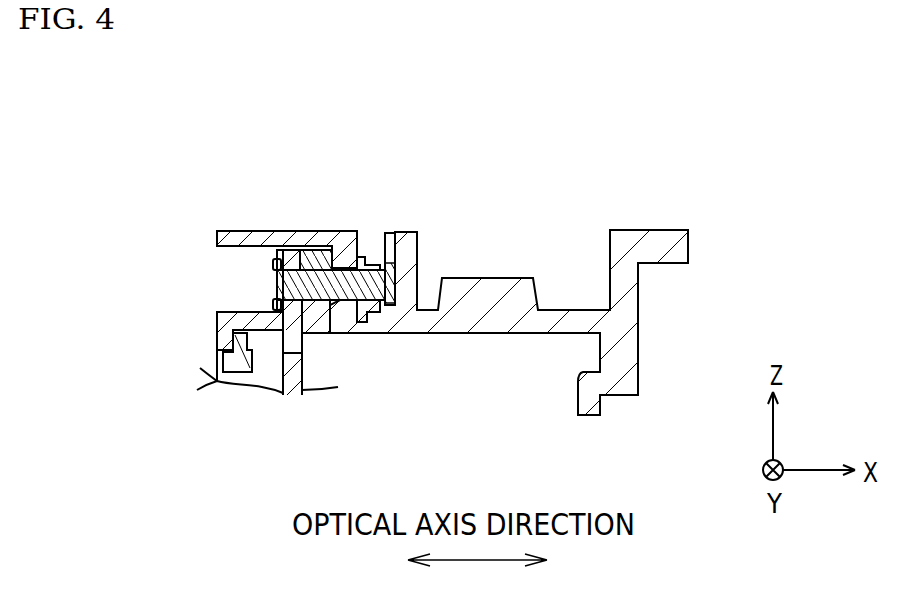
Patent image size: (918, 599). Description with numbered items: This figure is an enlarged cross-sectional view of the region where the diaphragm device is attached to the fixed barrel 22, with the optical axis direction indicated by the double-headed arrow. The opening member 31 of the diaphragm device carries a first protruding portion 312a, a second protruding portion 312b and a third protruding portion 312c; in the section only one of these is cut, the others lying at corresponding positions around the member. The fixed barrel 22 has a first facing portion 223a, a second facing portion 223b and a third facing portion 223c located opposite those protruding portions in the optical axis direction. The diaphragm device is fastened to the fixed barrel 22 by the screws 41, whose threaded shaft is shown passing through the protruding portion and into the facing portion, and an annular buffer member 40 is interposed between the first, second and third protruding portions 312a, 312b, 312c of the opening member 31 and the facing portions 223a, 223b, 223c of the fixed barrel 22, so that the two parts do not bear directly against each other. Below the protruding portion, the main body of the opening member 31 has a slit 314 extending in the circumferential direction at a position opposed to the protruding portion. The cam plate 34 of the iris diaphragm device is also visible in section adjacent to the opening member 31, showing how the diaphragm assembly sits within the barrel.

The fixed barrel 22 is at (492, 276).
The opening member 31 is at (317, 304).
The cam plate 34 is at (220, 372).
The annular buffer member 40 is at (261, 285).
The screw 41 is at (275, 282).
The slit 314 is at (303, 347).
The first protruding portion 312a is at (172, 209).
The second protruding portion 312b is at (172, 209).
The third protruding portion 312c is at (278, 247).
The first facing portion 223a is at (362, 206).
The second facing portion 223b is at (362, 206).
The third facing portion 223c is at (317, 247).